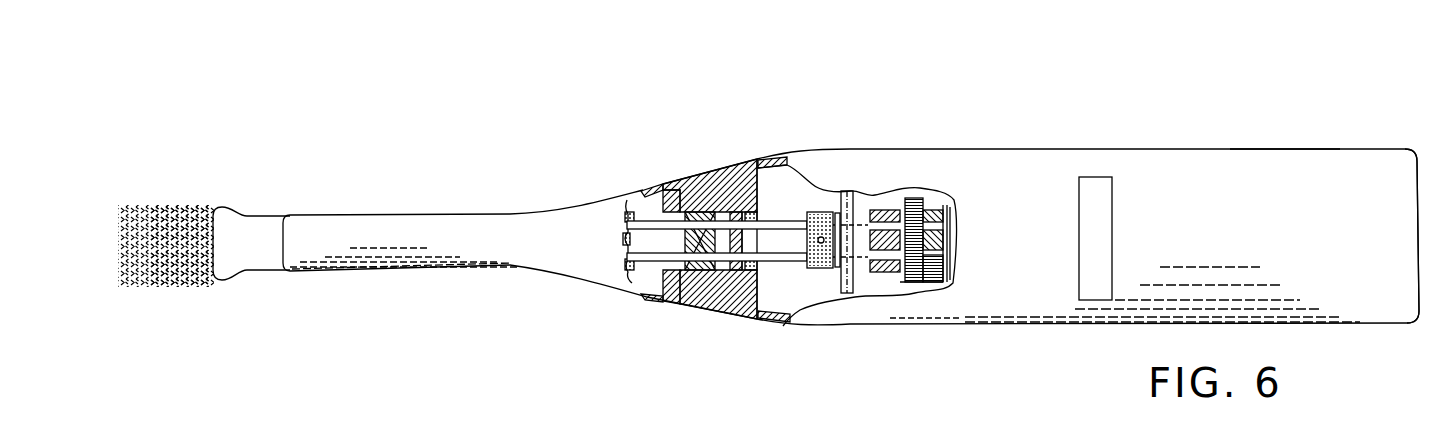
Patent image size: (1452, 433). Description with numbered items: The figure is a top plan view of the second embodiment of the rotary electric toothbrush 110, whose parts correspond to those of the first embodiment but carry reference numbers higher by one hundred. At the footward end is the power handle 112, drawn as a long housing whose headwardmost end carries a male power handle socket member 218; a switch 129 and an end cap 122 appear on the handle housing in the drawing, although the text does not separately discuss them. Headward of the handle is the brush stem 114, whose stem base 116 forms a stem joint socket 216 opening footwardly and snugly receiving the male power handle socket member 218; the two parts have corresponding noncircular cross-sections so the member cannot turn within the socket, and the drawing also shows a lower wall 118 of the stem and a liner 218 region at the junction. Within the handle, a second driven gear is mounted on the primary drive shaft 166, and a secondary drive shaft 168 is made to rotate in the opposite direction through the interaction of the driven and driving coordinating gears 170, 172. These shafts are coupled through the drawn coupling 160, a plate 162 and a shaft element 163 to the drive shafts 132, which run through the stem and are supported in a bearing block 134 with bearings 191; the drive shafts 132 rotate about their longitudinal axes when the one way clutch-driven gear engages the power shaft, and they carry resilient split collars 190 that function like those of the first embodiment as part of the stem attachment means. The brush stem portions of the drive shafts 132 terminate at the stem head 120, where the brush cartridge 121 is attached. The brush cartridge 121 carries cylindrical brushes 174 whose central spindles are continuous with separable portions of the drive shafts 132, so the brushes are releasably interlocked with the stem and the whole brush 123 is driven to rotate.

The electric toothbrush 110 is at (1222, 143).
The power handle 112 is at (1285, 148).
The brush stem 114 is at (403, 213).
The stem base 116 is at (645, 191).
The neck lower wall 118 is at (418, 268).
The stem head 120 is at (303, 218).
The brush cartridge 121 is at (237, 206).
The end cap 122 is at (1414, 163).
The brush 123 is at (128, 210).
The switch 129 is at (1095, 177).
The drive shafts 132 is at (633, 210).
The bearing block 134 is at (725, 190).
The coupling 160 is at (816, 212).
The washer plate 162 is at (838, 212).
The drive shaft 163 is at (840, 222).
The primary drive shaft 166 is at (878, 208).
The secondary drive shaft 168 is at (870, 285).
The driven coordinating gear 170 is at (908, 205).
The driving coordinating gear 172 is at (903, 283).
The cylindrical brushes 174 is at (178, 205).
The resilient split collars 190 is at (676, 186).
The bearing 191 is at (750, 210).
The stem joint socket 216 is at (660, 300).
The male power handle socket member 218 is at (679, 302).